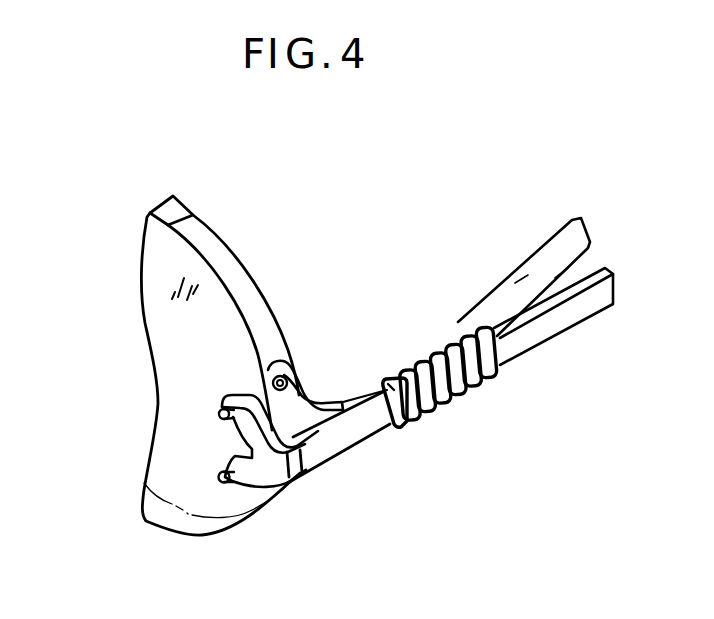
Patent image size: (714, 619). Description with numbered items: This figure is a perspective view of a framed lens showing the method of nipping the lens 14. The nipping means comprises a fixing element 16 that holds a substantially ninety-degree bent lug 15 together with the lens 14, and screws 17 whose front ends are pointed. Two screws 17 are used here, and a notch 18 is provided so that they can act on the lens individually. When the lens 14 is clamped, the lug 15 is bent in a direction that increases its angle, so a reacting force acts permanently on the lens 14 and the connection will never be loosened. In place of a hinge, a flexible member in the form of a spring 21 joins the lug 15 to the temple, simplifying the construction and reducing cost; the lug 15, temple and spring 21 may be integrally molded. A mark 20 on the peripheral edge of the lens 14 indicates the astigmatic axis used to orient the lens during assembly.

The lens 14 is at (190, 493).
The lug 15 is at (332, 447).
The fixing element 16 is at (305, 396).
The screws 17 is at (220, 414).
The notch 18 is at (229, 447).
The mark 20 is at (207, 218).
The spring 21 is at (455, 398).